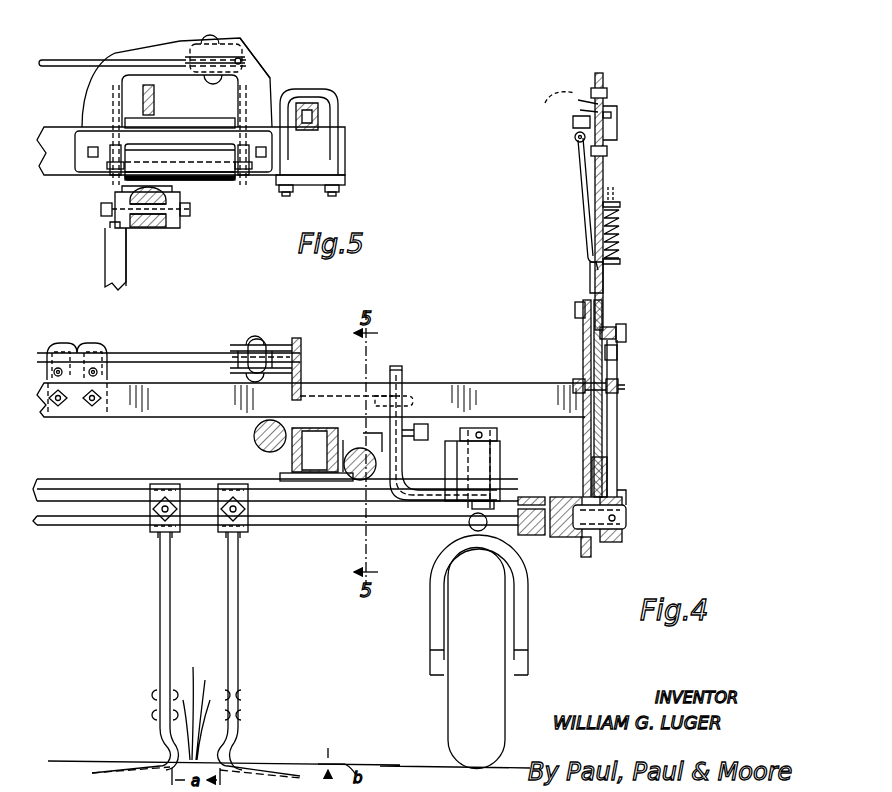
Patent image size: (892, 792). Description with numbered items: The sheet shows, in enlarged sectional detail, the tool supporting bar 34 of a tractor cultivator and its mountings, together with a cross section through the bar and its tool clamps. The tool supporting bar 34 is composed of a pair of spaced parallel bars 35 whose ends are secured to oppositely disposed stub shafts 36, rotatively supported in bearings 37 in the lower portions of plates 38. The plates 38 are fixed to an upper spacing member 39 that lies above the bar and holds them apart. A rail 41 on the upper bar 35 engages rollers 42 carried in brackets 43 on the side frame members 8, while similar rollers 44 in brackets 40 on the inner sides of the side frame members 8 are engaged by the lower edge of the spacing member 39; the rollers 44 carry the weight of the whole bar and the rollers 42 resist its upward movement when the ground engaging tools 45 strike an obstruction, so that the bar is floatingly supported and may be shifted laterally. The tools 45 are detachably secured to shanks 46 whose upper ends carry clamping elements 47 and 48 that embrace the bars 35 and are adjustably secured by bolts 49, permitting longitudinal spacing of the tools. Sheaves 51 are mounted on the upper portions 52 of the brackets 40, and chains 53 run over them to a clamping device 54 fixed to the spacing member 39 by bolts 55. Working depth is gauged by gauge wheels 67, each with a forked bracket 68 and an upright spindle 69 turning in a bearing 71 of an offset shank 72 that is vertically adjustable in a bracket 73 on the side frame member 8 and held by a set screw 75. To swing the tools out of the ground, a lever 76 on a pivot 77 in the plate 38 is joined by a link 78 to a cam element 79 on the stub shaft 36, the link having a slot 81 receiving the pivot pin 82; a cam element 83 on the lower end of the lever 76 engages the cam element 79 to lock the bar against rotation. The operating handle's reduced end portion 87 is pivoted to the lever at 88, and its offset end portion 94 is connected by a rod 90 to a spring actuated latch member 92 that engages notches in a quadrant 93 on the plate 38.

In FIG. 5, the side frame member 8 is at (60, 128).
In FIG. 4, the side frame member 8 is at (316, 482).
In FIG. 5, the tool supporting bar 34 is at (160, 242).
In FIG. 4, the tool supporting bar 34 is at (90, 540).
In FIG. 5, the spaced parallel bars 35 is at (152, 232).
In FIG. 4, the spaced parallel bars 35 is at (66, 492).
In FIG. 4, the stub shaft 36 is at (626, 510).
In FIG. 4, the bearing 37 is at (572, 540).
In FIG. 4, the plate 38 is at (583, 450).
In FIG. 5, the upper spacing member 39 is at (155, 97).
In FIG. 4, the upper spacing member 39 is at (510, 408).
In FIG. 5, the bracket 40 is at (100, 100).
In FIG. 4, the bracket 40 is at (290, 452).
In FIG. 5, the rail 41 is at (135, 184).
In FIG. 4, the rail 41 is at (122, 482).
In FIG. 5, the roller 42 is at (196, 183).
In FIG. 4, the roller 42 is at (357, 478).
In FIG. 5, the bracket 43 is at (245, 186).
In FIG. 4, the bracket 43 is at (344, 455).
In FIG. 5, the roller 44 is at (203, 124).
In FIG. 4, the roller 44 is at (254, 440).
In FIG. 4, the ground engaging tool 45 is at (156, 745).
In FIG. 5, the shank 46 is at (112, 272).
In FIG. 4, the shank 46 is at (162, 646).
In FIG. 5, the clamping element 47 is at (114, 223).
In FIG. 4, the clamping element 47 is at (152, 530).
In FIG. 5, the clamping element 48 is at (183, 226).
In FIG. 5, the bolt 49 is at (100, 210).
In FIG. 4, the bolt 49 is at (168, 512).
In FIG. 5, the sheave 51 is at (188, 45).
In FIG. 4, the sheave 51 is at (236, 347).
In FIG. 5, the upper portion of bracket 52 is at (236, 40).
In FIG. 4, the upper portion of bracket 52 is at (285, 340).
In FIG. 5, the chain 53 is at (62, 58).
In FIG. 4, the chain 53 is at (180, 356).
In FIG. 4, the clamping device 54 is at (75, 348).
In FIG. 4, the bolt 55 is at (92, 404).
In FIG. 4, the gauge wheel 67 is at (478, 718).
In FIG. 4, the forked bracket 68 is at (528, 638).
In FIG. 4, the upright spindle 69 is at (492, 455).
In FIG. 4, the bearing 71 is at (500, 470).
In FIG. 4, the offset shank 72 is at (403, 370).
In FIG. 5, the bracket 73 is at (313, 106).
In FIG. 4, the bracket 73 is at (368, 398).
In FIG. 4, the set screw 75 is at (428, 425).
In FIG. 4, the lever 76 is at (604, 175).
In FIG. 4, the pivot 77 is at (619, 386).
In FIG. 4, the link 78 is at (617, 368).
In FIG. 4, the cam element 79 is at (620, 495).
In FIG. 4, the slot 81 is at (617, 347).
In FIG. 4, the pivot pin 82 is at (628, 330).
In FIG. 4, the cam element 83 is at (606, 470).
In FIG. 4, the reduced end portion 87 is at (612, 120).
In FIG. 4, the pivotal connection 88 is at (606, 100).
In FIG. 4, the rod 90 is at (580, 196).
In FIG. 4, the latch member 92 is at (610, 270).
In FIG. 4, the quadrant 93 is at (575, 308).
In FIG. 4, the offset end portion 94 is at (572, 118).